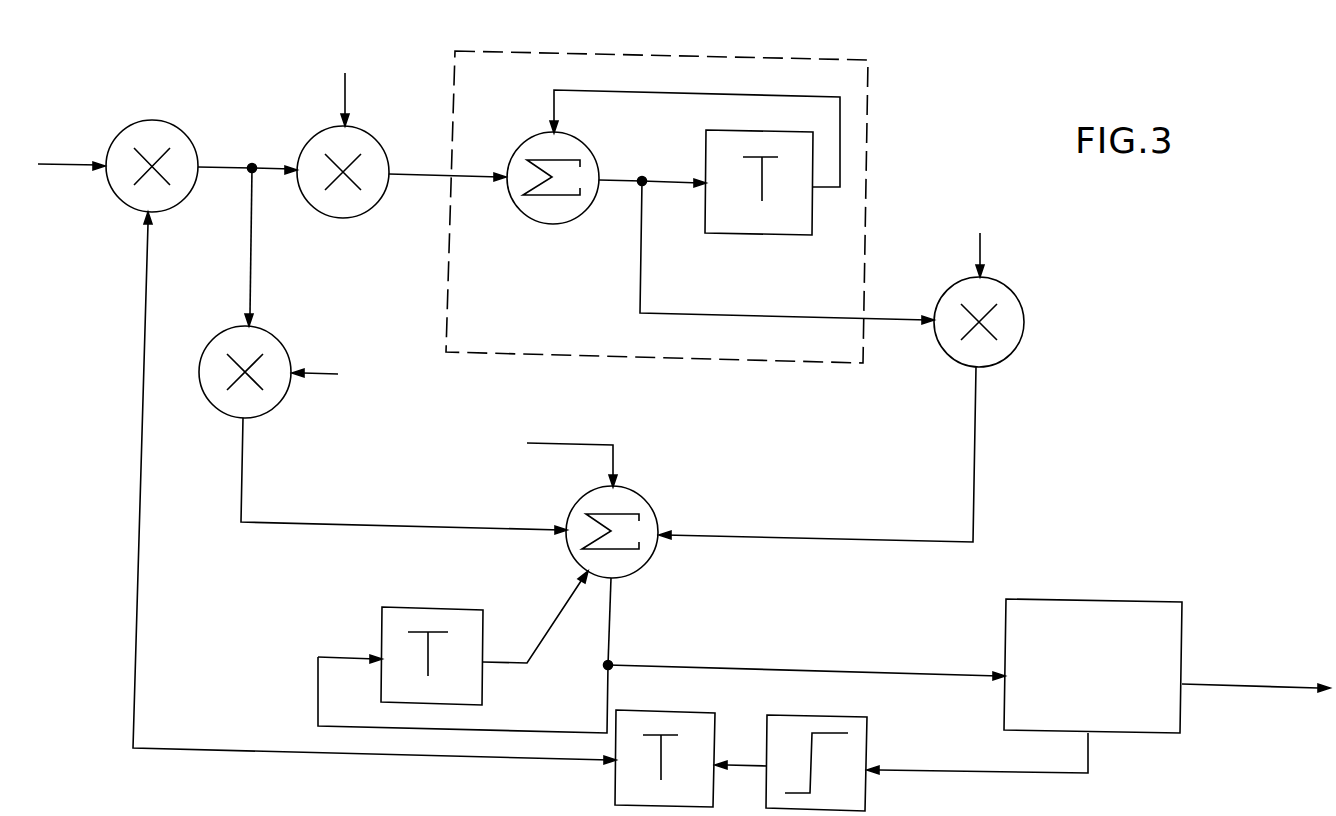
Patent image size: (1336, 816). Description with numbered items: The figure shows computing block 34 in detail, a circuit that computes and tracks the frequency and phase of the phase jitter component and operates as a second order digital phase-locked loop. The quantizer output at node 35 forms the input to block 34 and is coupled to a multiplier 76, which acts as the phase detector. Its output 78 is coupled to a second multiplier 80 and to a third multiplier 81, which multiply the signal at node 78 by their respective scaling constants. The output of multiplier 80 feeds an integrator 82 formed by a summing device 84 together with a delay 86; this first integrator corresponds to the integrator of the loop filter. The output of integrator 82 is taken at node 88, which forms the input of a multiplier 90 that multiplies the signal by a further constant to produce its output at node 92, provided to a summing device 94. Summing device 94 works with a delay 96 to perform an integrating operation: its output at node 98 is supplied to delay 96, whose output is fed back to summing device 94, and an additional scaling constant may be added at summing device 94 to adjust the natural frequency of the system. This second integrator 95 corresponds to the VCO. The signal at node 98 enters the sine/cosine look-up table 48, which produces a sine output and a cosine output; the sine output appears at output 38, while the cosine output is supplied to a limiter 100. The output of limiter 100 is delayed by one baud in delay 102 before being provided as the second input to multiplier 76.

The computing block 34 is at (80, 494).
The node 35 is at (48, 163).
The sine output signal 38 is at (1289, 683).
The sine/cosine look-up table 48 is at (1128, 600).
The multiplier 76 is at (164, 121).
The output node 78 is at (243, 165).
The second multiplier 80 is at (348, 218).
The third multiplier 81 is at (281, 340).
The integrator 82 is at (525, 49).
The summing device 84 is at (597, 158).
The delay 86 is at (748, 236).
The node 88 is at (886, 317).
The multiplier 90 is at (1021, 302).
The node 92 is at (974, 510).
The summing device 94 is at (645, 500).
The second integrator 95 is at (367, 523).
The delay 96 is at (428, 606).
The node 98 is at (616, 659).
The limiter 100 is at (867, 742).
The delay 102 is at (698, 710).